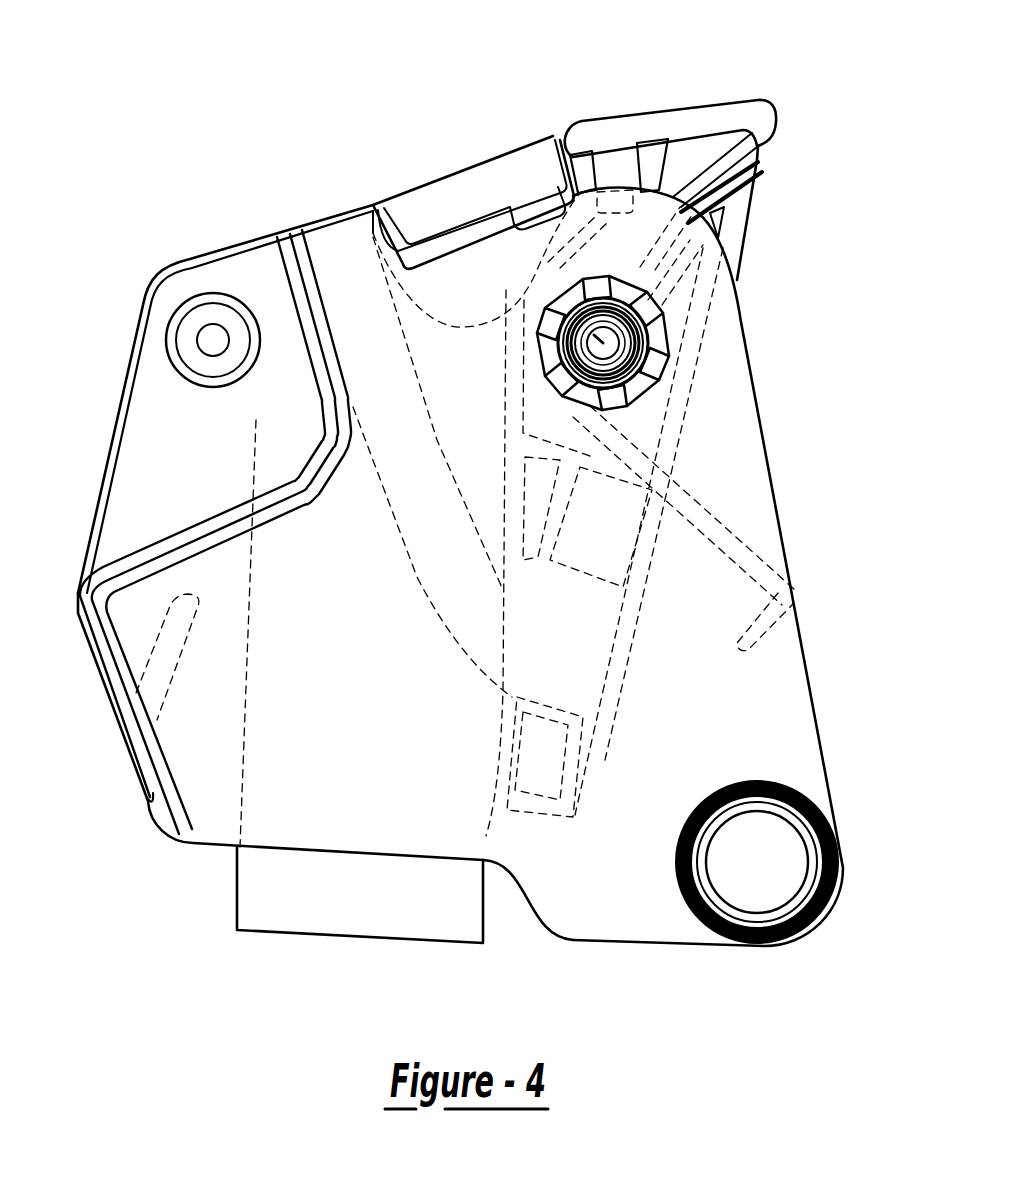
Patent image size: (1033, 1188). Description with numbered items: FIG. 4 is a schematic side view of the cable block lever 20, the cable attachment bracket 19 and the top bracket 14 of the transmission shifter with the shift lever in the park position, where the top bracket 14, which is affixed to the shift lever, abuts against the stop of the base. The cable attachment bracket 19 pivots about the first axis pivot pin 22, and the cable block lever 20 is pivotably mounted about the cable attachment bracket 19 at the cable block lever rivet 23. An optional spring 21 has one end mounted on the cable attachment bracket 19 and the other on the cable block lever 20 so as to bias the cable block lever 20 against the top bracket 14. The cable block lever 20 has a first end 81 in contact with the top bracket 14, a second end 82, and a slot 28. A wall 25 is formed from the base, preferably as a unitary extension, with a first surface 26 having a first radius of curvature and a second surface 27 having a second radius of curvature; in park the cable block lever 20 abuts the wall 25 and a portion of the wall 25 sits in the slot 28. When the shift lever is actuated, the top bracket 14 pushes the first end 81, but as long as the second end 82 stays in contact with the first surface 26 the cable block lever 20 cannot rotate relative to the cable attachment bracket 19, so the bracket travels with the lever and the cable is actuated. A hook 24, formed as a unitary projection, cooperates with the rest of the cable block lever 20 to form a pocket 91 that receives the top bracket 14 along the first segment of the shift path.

The top bracket 14 is at (443, 203).
The cable attachment bracket 19 is at (142, 385).
The cable block lever 20 is at (627, 127).
The spring 21 is at (708, 516).
The first axis pivot pin 22 is at (757, 865).
The cable block lever rivet 23 is at (660, 357).
The hook 24 is at (367, 252).
The wall 25 is at (237, 886).
The first surface 26 is at (486, 842).
The second surface 27 is at (413, 573).
The slot 28 is at (560, 775).
The first end 81 is at (773, 120).
The second end 82 is at (550, 820).
The pocket 91 is at (480, 300).